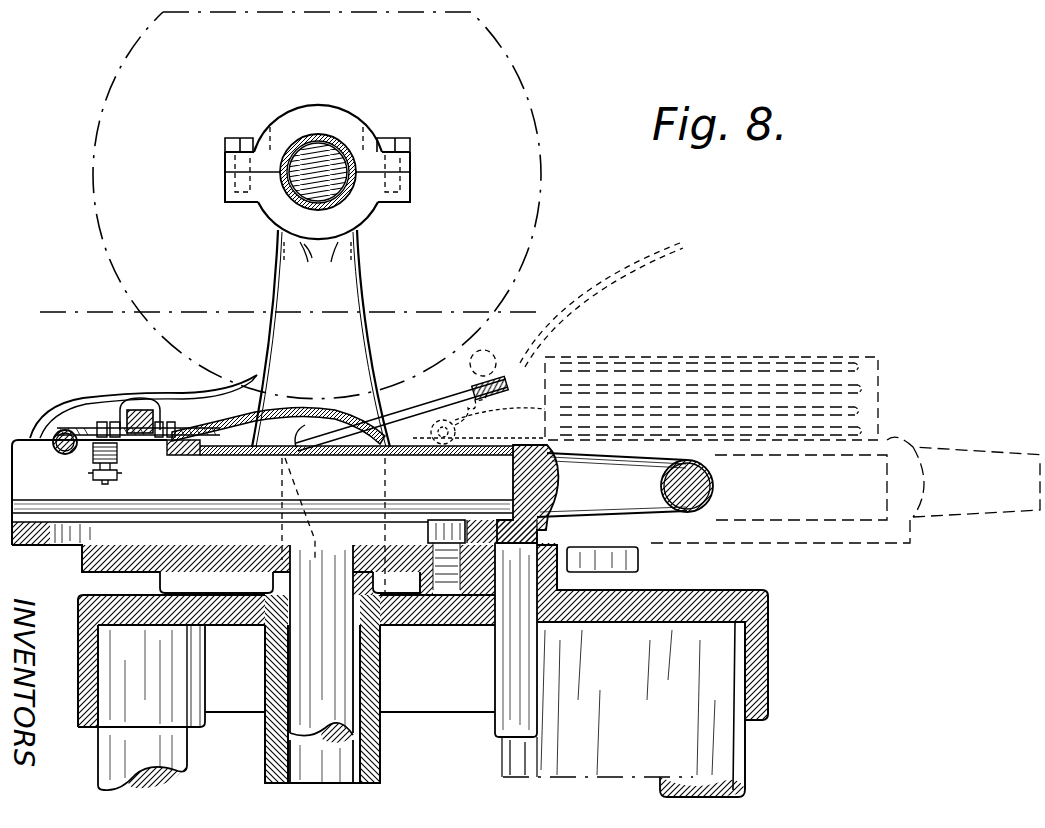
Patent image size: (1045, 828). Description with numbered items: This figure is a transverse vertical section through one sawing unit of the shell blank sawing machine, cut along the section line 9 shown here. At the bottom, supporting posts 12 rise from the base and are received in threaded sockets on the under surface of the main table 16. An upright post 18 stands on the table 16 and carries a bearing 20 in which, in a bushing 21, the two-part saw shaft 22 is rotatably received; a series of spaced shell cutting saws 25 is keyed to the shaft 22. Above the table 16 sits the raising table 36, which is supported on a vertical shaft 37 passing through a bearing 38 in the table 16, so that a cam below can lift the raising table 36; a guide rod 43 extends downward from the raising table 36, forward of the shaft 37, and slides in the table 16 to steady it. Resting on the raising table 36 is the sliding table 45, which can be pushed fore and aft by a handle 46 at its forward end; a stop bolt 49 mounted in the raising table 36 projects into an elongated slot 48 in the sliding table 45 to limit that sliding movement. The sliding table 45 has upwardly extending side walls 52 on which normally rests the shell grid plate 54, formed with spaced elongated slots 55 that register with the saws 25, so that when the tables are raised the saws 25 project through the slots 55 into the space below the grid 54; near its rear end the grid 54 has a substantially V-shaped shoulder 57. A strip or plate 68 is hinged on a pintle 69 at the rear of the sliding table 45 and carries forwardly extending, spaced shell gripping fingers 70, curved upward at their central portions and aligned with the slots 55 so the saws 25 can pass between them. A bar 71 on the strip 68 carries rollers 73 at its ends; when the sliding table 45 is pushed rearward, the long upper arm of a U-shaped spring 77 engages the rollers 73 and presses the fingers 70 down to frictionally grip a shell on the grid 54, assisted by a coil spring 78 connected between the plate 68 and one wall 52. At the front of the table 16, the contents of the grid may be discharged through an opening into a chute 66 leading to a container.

The section line 9 is at (40, 312).
The supporting post 12 is at (764, 763).
The table 16 is at (238, 622).
The upright post 18 is at (321, 338).
The bearing 20 is at (337, 124).
The bushing 21 is at (291, 191).
The saw shaft 22 is at (318, 172).
The shell cutting saw 25 is at (317, 205).
The raising table 36 is at (80, 567).
The vertical shaft 37 is at (321, 664).
The bearing 38 is at (372, 673).
The guide rod 43 is at (525, 683).
The sliding table 45 is at (36, 540).
The handle 46 is at (791, 490).
The elongated slot 48 is at (114, 535).
The stop bolt 49 is at (440, 520).
The side wall 52 is at (262, 492).
The shell grid plate 54 is at (353, 457).
The elongated slot 55 is at (527, 474).
The V-shaped shoulder 57 is at (256, 447).
The chute 66 is at (624, 706).
The strip or plate 68 is at (87, 428).
The pintle 69 is at (60, 432).
The shell gripping finger 70 is at (327, 412).
The bar 71 is at (140, 412).
The roller 73 is at (162, 420).
The U-shaped spring 77 is at (200, 397).
The coil spring 78 is at (118, 455).